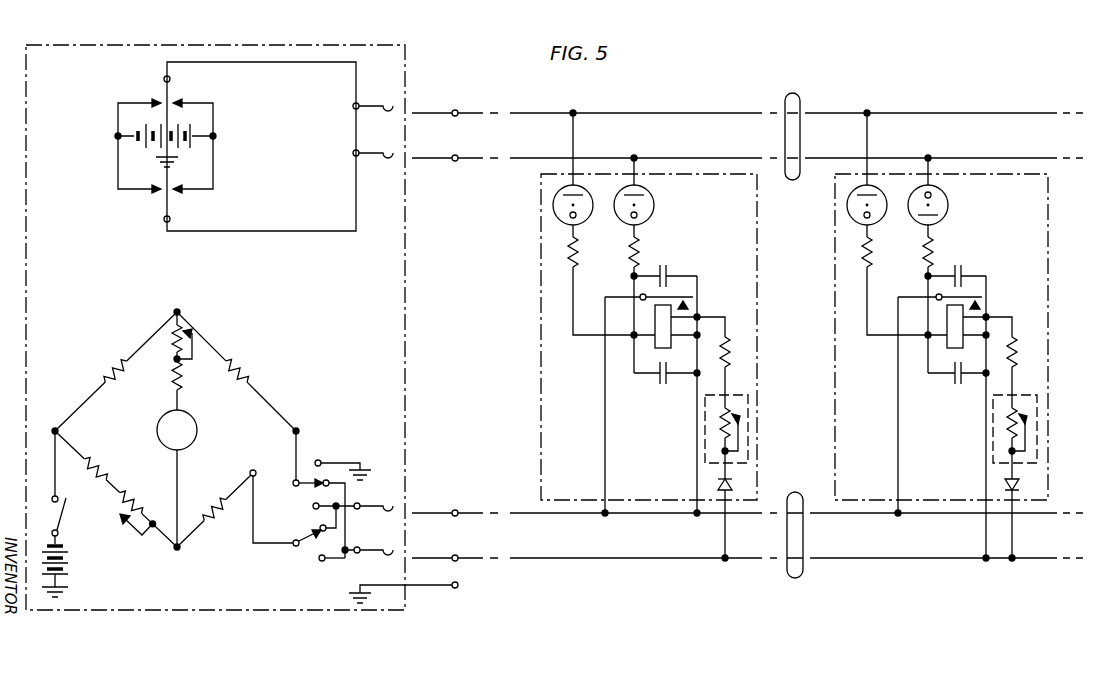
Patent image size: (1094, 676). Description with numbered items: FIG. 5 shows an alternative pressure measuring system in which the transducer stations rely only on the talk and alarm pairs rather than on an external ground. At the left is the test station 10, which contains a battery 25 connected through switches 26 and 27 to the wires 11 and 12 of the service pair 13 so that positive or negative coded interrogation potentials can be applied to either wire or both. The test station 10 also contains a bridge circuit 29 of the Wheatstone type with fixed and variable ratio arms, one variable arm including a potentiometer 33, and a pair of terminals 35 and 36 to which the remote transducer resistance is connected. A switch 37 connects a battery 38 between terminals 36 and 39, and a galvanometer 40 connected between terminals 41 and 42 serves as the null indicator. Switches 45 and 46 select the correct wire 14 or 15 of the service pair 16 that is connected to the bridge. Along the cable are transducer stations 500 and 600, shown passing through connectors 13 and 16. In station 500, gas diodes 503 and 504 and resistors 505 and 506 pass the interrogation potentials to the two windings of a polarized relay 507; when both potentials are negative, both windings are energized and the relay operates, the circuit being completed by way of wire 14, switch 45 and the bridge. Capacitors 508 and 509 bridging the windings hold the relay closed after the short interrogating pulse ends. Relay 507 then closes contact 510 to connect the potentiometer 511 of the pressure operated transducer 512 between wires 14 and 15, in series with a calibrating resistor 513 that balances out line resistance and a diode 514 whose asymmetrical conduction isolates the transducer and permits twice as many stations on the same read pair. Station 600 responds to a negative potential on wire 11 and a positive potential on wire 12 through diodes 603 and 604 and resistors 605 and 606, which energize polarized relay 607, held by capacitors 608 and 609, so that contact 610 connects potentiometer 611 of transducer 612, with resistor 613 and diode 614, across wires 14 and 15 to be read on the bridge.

The test station 10 is at (407, 73).
The wire 11 is at (527, 113).
The wire 12 is at (527, 158).
The service pair 13 is at (792, 93).
The wire 14 is at (527, 514).
The wire 15 is at (527, 559).
The service pair 16 is at (795, 492).
The battery 25 is at (186, 124).
The switch 26 is at (170, 88).
The switch 27 is at (170, 204).
The bridge circuit 29 is at (230, 437).
The potentiometer 33 is at (135, 531).
The terminal 35 is at (262, 457).
The terminal 36 is at (298, 430).
The switch 37 is at (58, 527).
The battery 38 is at (66, 556).
The terminal 39 is at (53, 430).
The galvanometer 40 is at (185, 445).
The terminal 41 is at (178, 311).
The terminal 42 is at (177, 552).
The switch 45 is at (304, 486).
The switch 46 is at (299, 548).
The transducer station 500 is at (540, 298).
The gas diode 503 is at (580, 192).
The gas diode 504 is at (651, 203).
The resistor 505 is at (580, 257).
The resistor 506 is at (641, 257).
The polarized relay 507 is at (654, 324).
The capacitor 508 is at (670, 272).
The capacitor 509 is at (658, 382).
The contact 510 is at (689, 305).
The potentiometer 511 is at (737, 410).
The pressure operated transducer 512 is at (704, 455).
The calibrating resistor 513 is at (737, 344).
The diode 514 is at (735, 483).
The transducer station 600 is at (834, 310).
The diode 603 is at (874, 192).
The diode 604 is at (945, 203).
The resistor 605 is at (874, 257).
The resistor 606 is at (935, 257).
The polarized relay 607 is at (946, 324).
The capacitor 608 is at (964, 272).
The capacitor 609 is at (952, 382).
The contact 610 is at (981, 305).
The potentiometer 611 is at (1024, 412).
The transducer 612 is at (992, 455).
The resistor 613 is at (1024, 344).
The diode 614 is at (1022, 483).